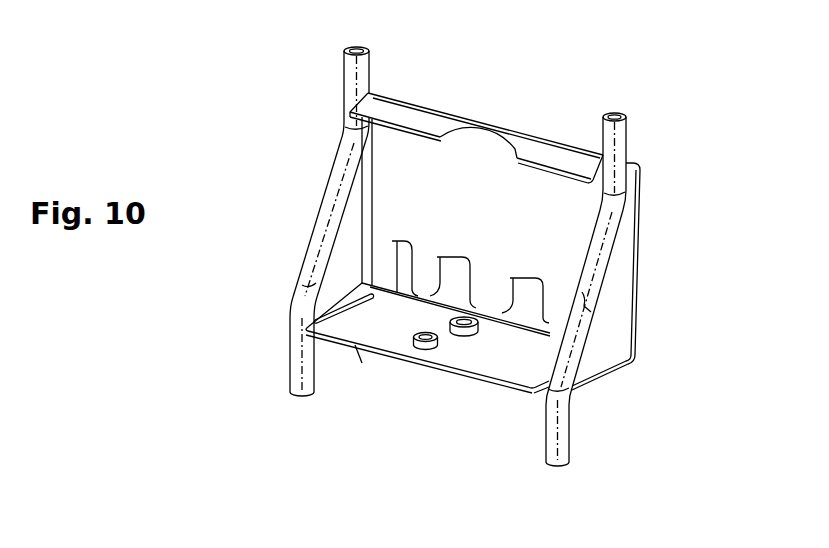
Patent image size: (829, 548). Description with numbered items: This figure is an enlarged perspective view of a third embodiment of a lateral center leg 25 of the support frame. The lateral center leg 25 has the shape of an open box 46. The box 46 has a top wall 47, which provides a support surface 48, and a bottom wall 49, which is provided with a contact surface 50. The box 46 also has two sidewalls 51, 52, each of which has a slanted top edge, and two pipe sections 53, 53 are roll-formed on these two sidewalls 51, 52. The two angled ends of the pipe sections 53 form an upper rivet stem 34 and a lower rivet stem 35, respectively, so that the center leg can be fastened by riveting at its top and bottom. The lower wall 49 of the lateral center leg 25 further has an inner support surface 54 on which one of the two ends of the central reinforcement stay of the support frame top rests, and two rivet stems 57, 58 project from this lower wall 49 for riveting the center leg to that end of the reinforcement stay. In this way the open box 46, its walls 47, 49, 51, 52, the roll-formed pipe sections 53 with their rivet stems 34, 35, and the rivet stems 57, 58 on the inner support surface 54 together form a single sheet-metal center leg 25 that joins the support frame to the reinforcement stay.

The lateral center leg 25 is at (466, 269).
The upper rivet stem 34 is at (347, 78).
The lower rivet stem 35 is at (238, 3).
The open box 46 is at (567, 210).
The top wall 47 is at (540, 153).
The support surface 48 is at (508, 91).
The bottom wall 49 is at (502, 387).
The contact surface 50 is at (357, 347).
The sidewall 51 is at (612, 328).
The sidewall 52 is at (347, 242).
The pipe section 53 is at (337, 192).
The inner support surface 54 is at (406, 410).
The rivet stem 57 is at (457, 335).
The rivet stem 58 is at (416, 347).